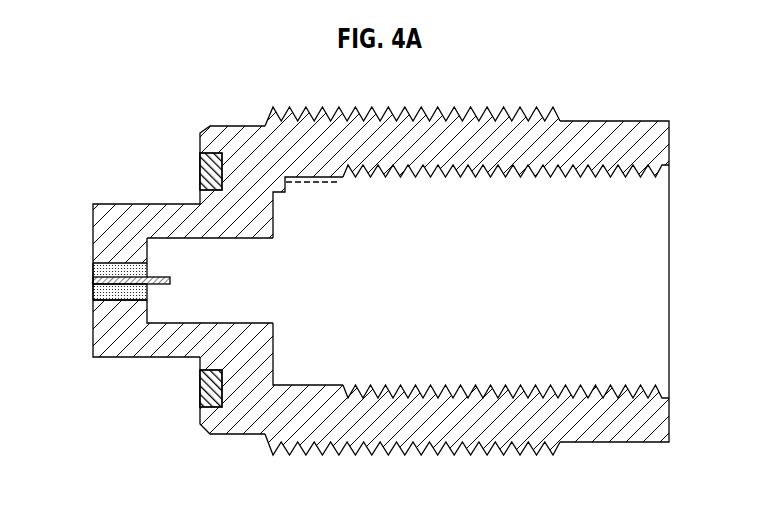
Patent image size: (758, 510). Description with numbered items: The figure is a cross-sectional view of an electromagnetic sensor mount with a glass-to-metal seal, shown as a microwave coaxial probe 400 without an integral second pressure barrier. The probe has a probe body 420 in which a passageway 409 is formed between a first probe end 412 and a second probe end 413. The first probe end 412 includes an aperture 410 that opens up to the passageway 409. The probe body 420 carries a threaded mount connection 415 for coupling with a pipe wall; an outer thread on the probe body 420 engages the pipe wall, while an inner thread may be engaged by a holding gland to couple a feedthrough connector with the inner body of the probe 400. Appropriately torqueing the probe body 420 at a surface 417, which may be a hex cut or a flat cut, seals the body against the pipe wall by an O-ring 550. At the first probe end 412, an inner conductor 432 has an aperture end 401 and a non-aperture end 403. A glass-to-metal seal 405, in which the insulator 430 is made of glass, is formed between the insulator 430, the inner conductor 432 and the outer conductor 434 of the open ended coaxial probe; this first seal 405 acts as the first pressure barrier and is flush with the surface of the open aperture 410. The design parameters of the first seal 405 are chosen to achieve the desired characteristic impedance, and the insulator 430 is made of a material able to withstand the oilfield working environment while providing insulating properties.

The microwave coaxial probe 400 is at (166, 121).
The aperture end of inner conductor 401 is at (93, 282).
The non-aperture end of inner conductor 403 is at (180, 276).
The glass-to-metal seal 405 is at (118, 255).
The passageway 409 is at (651, 308).
The aperture 410 is at (82, 319).
The first probe end 412 is at (97, 188).
The second probe end 413 is at (641, 98).
The threaded mount connection 415 is at (480, 158).
The torqueing surface 417 is at (612, 443).
The probe body 420 is at (473, 431).
The insulator 430 is at (132, 300).
The inner conductor 432 is at (118, 284).
The outer conductor 434 is at (158, 203).
The O-ring 550 is at (200, 397).